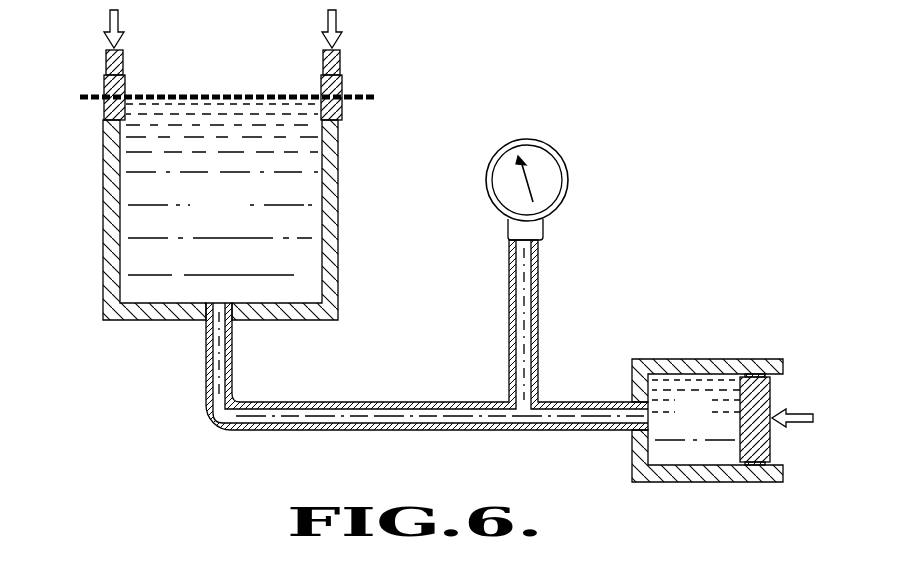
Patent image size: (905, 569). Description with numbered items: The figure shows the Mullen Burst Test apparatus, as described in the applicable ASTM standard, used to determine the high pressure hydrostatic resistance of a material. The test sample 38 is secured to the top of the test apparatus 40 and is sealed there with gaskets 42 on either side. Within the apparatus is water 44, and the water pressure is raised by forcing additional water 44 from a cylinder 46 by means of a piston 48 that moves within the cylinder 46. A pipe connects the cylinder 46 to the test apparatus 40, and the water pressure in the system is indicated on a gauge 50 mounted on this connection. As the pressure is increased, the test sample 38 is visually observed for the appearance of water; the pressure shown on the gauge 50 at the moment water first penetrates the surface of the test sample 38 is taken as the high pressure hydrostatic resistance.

The test sample 38 is at (201, 96).
The test apparatus 40 is at (105, 191).
The gaskets 42 is at (108, 115).
The water 44 is at (232, 213).
The cylinder 46 is at (698, 359).
The piston 48 is at (772, 390).
The gauge 50 is at (568, 162).